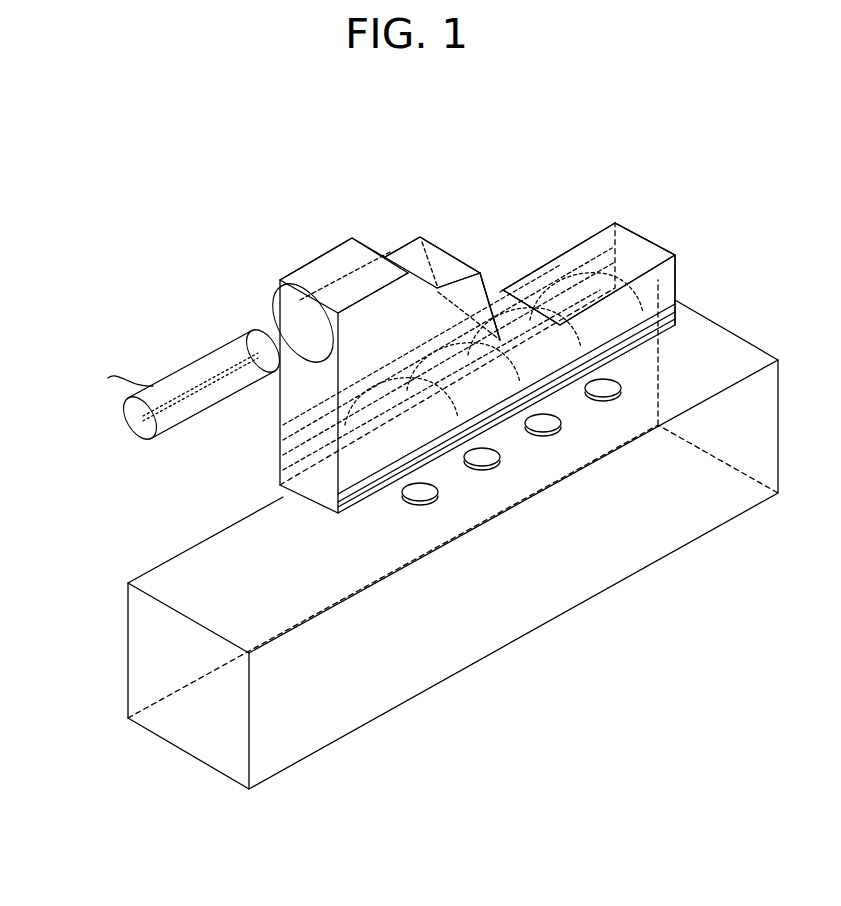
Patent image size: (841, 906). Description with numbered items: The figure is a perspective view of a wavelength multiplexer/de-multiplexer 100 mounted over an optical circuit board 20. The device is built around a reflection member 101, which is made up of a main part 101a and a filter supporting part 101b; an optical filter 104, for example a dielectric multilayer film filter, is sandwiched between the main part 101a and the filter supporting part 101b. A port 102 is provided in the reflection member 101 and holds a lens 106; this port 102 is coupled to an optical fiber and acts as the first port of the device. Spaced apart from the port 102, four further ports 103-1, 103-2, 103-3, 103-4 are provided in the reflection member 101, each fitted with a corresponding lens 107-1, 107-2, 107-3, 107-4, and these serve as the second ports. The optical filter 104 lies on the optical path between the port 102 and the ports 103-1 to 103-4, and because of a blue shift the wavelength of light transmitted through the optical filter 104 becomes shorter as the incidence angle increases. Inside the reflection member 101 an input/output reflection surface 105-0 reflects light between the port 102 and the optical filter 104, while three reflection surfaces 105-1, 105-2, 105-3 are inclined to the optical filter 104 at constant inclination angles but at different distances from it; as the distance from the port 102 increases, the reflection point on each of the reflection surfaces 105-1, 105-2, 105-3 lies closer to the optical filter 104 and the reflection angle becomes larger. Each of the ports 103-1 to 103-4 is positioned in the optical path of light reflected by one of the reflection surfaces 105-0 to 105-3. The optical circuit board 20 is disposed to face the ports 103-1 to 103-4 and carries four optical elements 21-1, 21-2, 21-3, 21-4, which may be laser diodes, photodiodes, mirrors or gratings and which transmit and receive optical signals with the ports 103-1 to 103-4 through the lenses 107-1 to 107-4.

The wavelength multiplexer/de-multiplexer 100 is at (100, 288).
The reflection member 101 is at (551, 368).
The main part 101a is at (664, 278).
The filter supporting part 101b is at (672, 326).
The port 102 is at (350, 310).
The port 103-1 is at (290, 482).
The port 103-2 is at (300, 437).
The port 103-3 is at (528, 360).
The port 103-4 is at (650, 295).
The optical filter 104 is at (384, 476).
The input/output reflection surface 105-0 is at (392, 250).
The reflection surface 105-1 is at (433, 234).
The reflection surface 105-2 is at (503, 290).
The reflection surface 105-3 is at (580, 268).
The lens 106 is at (273, 336).
The lens 107-1 is at (440, 458).
The lens 107-2 is at (504, 421).
The lens 107-3 is at (565, 386).
The lens 107-4 is at (625, 352).
The optical circuit board 20 is at (763, 428).
The optical element 21-1 is at (423, 504).
The optical element 21-2 is at (485, 469).
The optical element 21-3 is at (546, 435).
The optical element 21-4 is at (608, 400).